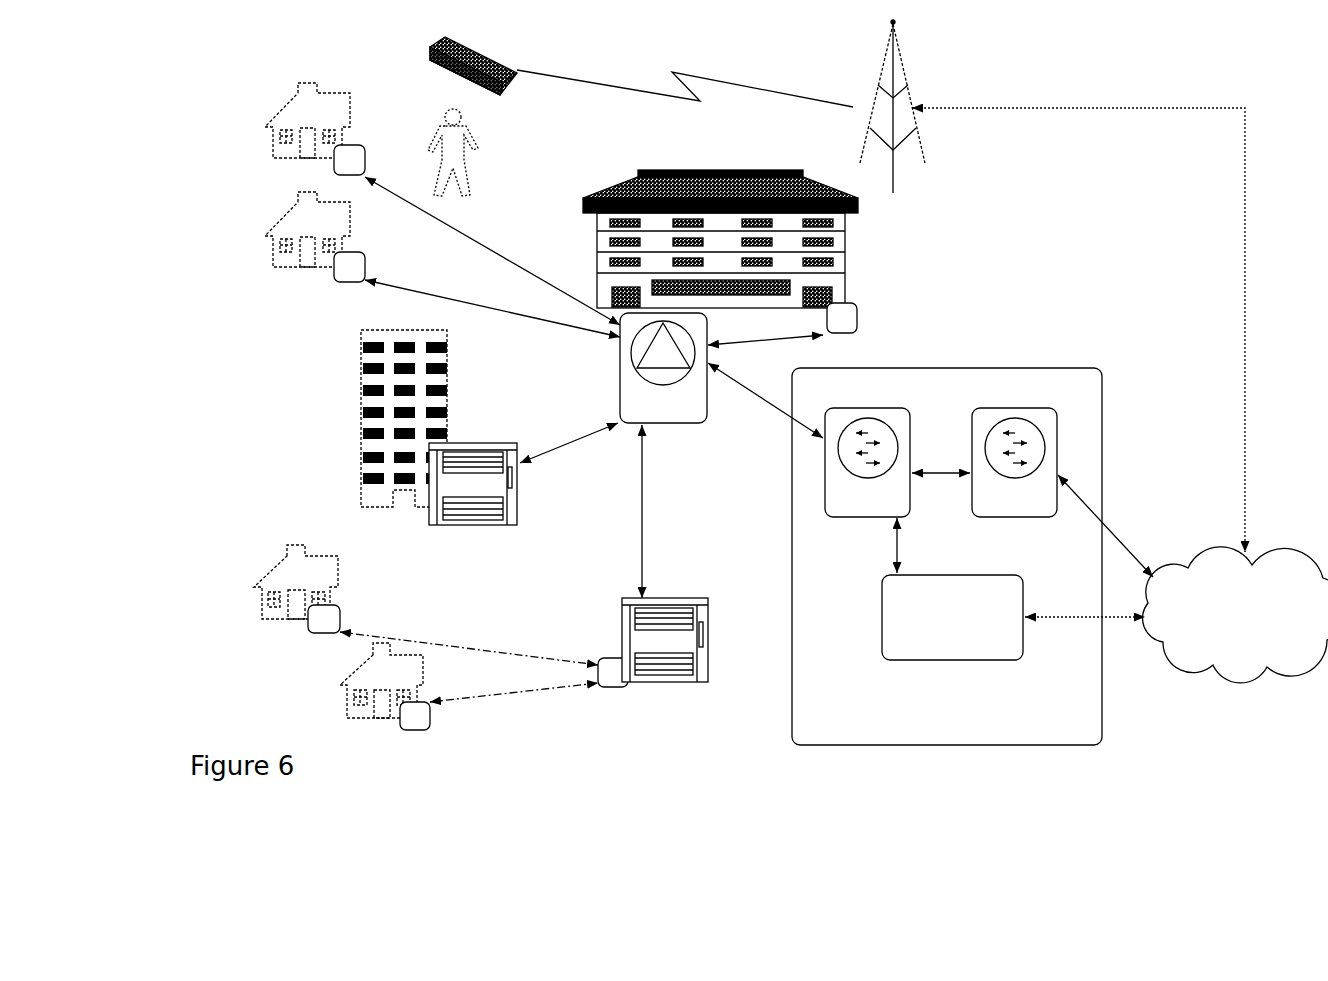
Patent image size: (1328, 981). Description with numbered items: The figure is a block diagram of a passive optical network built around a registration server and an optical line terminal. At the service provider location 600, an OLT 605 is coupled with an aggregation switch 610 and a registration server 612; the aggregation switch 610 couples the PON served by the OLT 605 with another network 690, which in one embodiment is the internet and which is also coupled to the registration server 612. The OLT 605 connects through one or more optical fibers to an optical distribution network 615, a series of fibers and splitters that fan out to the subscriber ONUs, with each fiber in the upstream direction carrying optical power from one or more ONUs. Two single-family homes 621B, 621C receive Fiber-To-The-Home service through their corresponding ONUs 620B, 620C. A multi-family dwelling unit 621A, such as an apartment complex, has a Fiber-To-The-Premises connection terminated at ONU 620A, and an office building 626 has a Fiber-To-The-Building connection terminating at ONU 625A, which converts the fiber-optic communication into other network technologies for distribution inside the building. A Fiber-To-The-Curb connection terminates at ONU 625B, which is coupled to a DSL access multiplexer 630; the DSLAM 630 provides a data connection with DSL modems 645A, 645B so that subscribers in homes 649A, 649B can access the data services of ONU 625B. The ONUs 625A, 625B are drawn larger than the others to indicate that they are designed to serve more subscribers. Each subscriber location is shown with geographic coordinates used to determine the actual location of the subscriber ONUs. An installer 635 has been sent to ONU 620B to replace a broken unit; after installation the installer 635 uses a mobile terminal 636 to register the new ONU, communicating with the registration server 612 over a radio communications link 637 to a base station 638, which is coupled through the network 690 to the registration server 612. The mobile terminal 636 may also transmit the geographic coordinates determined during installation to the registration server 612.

The service provider location 600 is at (930, 554).
The OLT 605 is at (839, 440).
The aggregation switch 610 is at (1056, 474).
The registration server 612 is at (1013, 589).
The optical distribution network 615 is at (663, 368).
The ONU 620A is at (843, 333).
The ONU 620B is at (363, 145).
The ONU 620C is at (347, 282).
The multi-family dwelling unit 621A is at (845, 245).
The home 621B is at (266, 118).
The home 621C is at (266, 210).
The ONU 625A is at (523, 475).
The ONU 625B is at (688, 563).
The office building 626 is at (361, 435).
The DSL access multiplexer 630 is at (610, 687).
The installer 635 is at (478, 138).
The mobile terminal 636 is at (513, 92).
The radio communications link 637 is at (740, 86).
The base station 638 is at (1052, 286).
The DSL modem 645A is at (418, 730).
The DSL modem 645B is at (327, 633).
The home 649A is at (360, 718).
The home 649B is at (277, 555).
The network 690 is at (1235, 615).